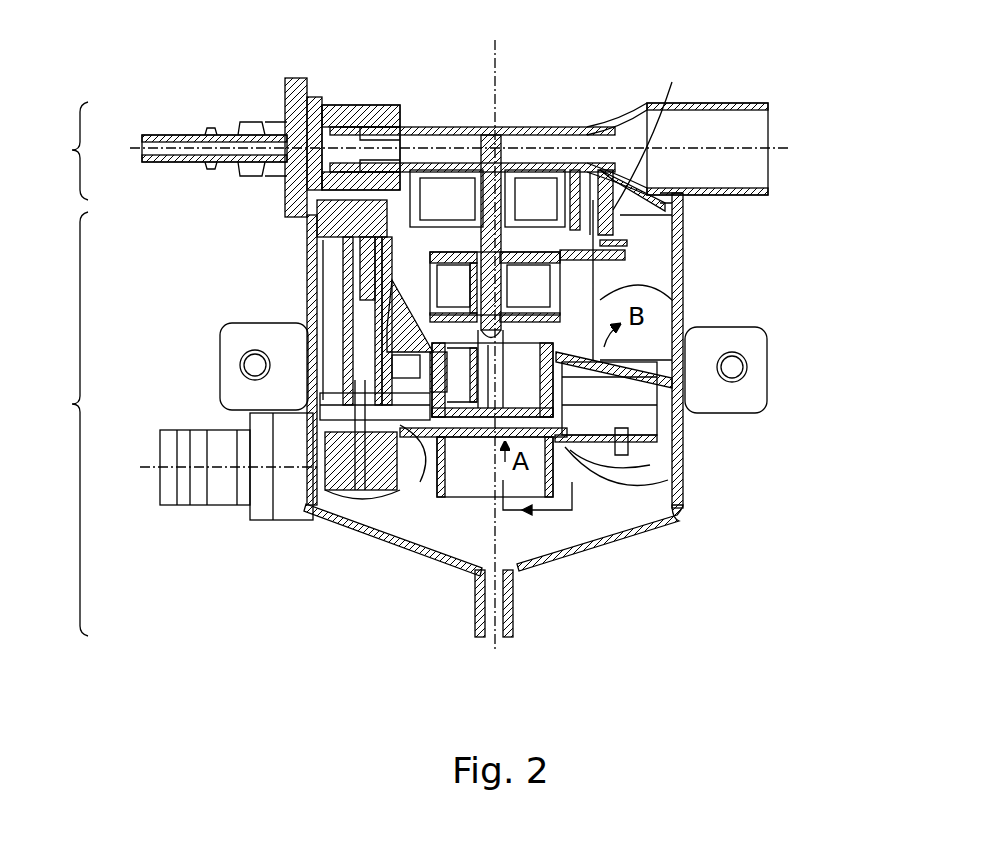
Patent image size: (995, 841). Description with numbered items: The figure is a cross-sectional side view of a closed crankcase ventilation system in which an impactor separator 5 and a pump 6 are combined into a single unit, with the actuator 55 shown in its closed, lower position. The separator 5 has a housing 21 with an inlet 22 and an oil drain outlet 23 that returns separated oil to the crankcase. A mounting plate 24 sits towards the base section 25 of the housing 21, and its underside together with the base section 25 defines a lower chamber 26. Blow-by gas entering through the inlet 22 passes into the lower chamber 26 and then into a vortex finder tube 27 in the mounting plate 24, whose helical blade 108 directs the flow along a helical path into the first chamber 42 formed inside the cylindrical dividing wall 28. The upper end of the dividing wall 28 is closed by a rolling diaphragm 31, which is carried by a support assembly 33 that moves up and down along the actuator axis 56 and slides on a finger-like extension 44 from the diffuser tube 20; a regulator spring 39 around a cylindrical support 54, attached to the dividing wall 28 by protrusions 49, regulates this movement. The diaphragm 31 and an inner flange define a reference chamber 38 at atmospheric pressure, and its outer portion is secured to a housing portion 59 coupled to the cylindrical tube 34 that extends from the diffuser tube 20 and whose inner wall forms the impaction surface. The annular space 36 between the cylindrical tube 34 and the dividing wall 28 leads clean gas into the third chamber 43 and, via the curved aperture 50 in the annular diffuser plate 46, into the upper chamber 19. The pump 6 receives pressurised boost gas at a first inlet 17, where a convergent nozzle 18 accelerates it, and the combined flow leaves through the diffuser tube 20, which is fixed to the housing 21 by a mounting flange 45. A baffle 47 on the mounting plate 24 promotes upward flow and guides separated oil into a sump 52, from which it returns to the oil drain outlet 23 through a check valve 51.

The separator 5 is at (67, 424).
The pump 6 is at (67, 151).
The first inlet 17 is at (165, 147).
The nozzle 18 is at (376, 140).
The upper chamber 19 is at (345, 177).
The diffuser tube 20 is at (762, 103).
The housing 21 is at (690, 512).
The inlet 22 is at (140, 492).
The oil drain outlet 23 is at (515, 605).
The mounting plate 24 is at (600, 467).
The base section 25 is at (330, 527).
The lower chamber 26 is at (603, 518).
The vortex finder tube 27 is at (425, 495).
The dividing wall 28 is at (380, 266).
The rolling diaphragm 31 is at (437, 247).
The support assembly 33 is at (340, 237).
The cylindrical tube 34 is at (610, 295).
The annular space 36 is at (420, 327).
The reference chamber 38 is at (408, 245).
The regulator spring 39 is at (330, 330).
The first chamber 42 is at (655, 432).
The third chamber 43 is at (650, 330).
The finger-like extension 44 is at (496, 255).
The mounting flange 45 is at (663, 212).
The annular diffuser plate 46 is at (305, 270).
The baffle 47 is at (690, 333).
The protrusions 49 is at (504, 325).
The curved aperture 50 is at (655, 258).
The check valve 51 is at (615, 440).
The sump 52 is at (700, 408).
The cylindrical support 54 is at (540, 255).
The actuator 55 is at (560, 232).
The actuator axis 56 is at (497, 95).
The housing portion 59 is at (642, 146).
The helical blade 108 is at (313, 412).